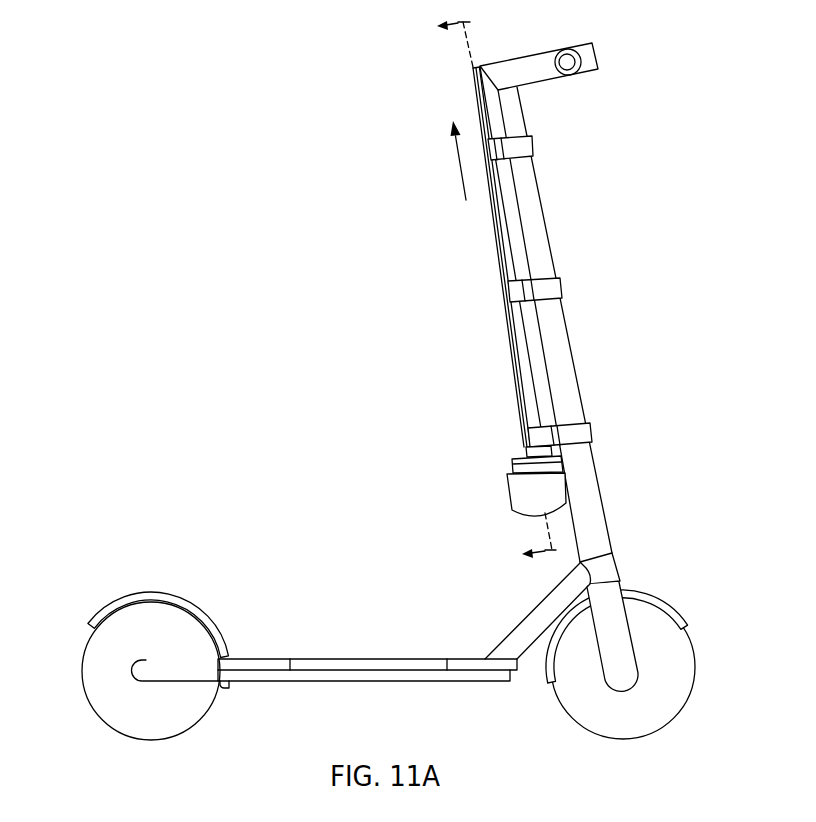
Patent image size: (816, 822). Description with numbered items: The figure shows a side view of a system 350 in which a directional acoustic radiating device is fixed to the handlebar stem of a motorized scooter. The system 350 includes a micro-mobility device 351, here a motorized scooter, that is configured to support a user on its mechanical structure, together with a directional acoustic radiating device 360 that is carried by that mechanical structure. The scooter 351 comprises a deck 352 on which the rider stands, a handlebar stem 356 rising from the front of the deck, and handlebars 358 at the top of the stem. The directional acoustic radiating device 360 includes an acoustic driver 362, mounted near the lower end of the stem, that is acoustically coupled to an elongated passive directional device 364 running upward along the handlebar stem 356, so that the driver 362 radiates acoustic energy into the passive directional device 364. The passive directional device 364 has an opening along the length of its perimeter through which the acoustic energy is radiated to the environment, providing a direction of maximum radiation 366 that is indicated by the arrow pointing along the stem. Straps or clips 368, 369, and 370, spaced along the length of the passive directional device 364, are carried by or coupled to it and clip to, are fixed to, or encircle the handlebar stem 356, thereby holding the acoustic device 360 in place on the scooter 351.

The system 350 is at (290, 294).
The micro-mobility device 351 is at (325, 584).
The deck 352 is at (300, 659).
The handlebar stem 356 is at (568, 357).
The handlebars 358 is at (541, 66).
The directional acoustic radiating device 360 is at (440, 433).
The acoustic driver 362 is at (522, 488).
The passive directional device 364 is at (497, 259).
The direction of maximum radiation 366 is at (464, 182).
The strap or clip 368 is at (584, 430).
The strap or clip 369 is at (558, 288).
The strap or clip 370 is at (531, 146).